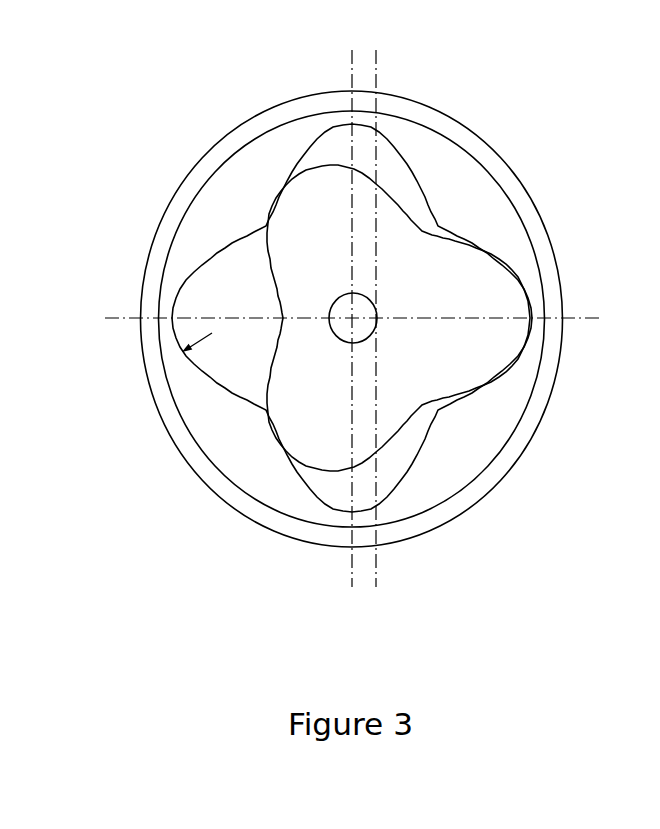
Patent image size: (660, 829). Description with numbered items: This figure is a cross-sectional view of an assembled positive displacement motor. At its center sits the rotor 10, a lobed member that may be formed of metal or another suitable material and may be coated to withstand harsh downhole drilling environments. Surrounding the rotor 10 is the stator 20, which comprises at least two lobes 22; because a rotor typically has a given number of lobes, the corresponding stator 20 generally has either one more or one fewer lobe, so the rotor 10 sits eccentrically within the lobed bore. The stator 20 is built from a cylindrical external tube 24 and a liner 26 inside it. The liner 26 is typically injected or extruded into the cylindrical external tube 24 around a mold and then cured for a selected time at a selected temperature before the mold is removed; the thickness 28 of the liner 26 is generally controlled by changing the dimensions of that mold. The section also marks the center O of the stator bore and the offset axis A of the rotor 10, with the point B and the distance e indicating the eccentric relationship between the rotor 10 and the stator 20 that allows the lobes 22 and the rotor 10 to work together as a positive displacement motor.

The rotor 10 is at (463, 370).
The stator 20 is at (517, 208).
The lobes 22 is at (227, 202).
The cylindrical external tube 24 is at (475, 145).
The liner 26 is at (510, 250).
The thickness 28 is at (157, 370).
The outer rotor center O is at (338, 295).
The inner rotor axis A is at (377, 318).
The point B is at (352, 320).
The eccentricity e is at (405, 407).